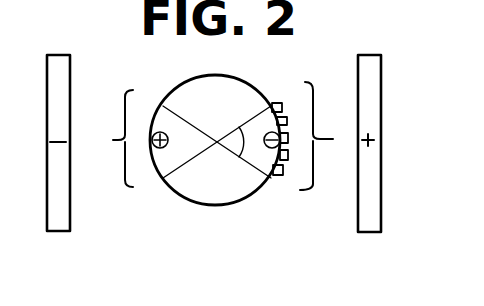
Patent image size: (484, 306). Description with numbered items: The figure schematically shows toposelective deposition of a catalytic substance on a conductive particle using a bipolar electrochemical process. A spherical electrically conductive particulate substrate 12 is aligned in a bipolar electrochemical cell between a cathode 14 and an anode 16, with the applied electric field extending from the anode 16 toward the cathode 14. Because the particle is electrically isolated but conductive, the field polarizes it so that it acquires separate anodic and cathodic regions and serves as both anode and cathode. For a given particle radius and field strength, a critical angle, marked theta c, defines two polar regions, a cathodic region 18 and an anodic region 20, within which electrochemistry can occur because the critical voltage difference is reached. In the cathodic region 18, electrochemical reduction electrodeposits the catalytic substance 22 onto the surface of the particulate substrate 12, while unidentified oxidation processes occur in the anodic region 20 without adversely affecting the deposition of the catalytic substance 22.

The electrically conductive particulate substrate 12 is at (202, 196).
The cathode 14 is at (62, 203).
The anode 16 is at (363, 217).
The cathodic region 18 is at (333, 139).
The anodic region 20 is at (113, 140).
The catalytic substance 22 is at (288, 117).